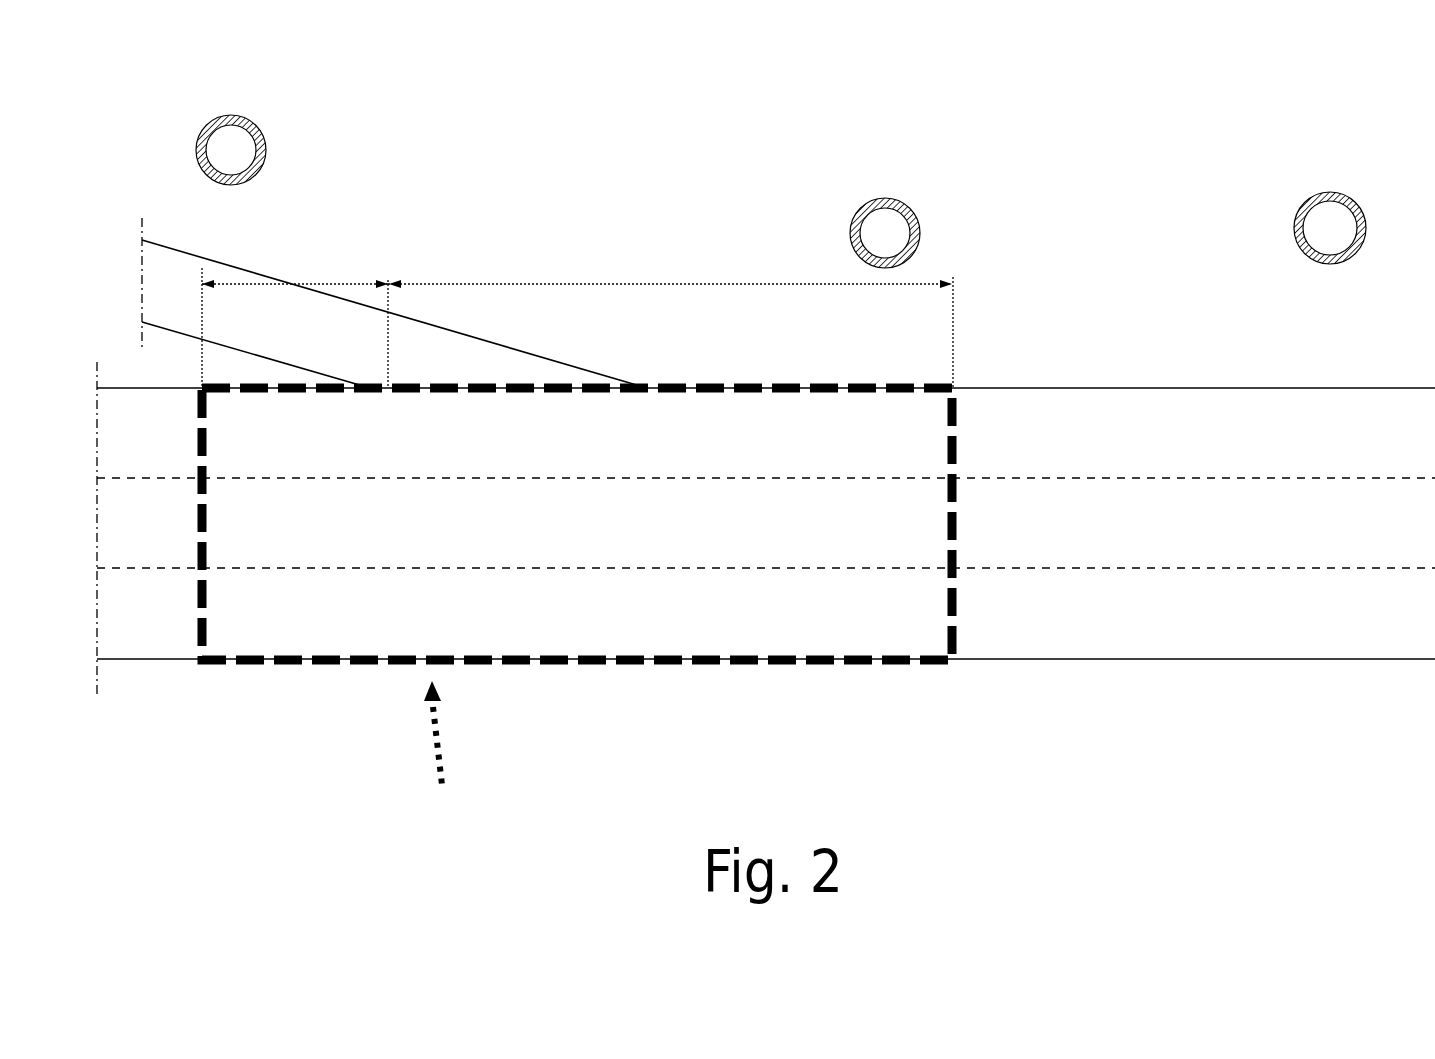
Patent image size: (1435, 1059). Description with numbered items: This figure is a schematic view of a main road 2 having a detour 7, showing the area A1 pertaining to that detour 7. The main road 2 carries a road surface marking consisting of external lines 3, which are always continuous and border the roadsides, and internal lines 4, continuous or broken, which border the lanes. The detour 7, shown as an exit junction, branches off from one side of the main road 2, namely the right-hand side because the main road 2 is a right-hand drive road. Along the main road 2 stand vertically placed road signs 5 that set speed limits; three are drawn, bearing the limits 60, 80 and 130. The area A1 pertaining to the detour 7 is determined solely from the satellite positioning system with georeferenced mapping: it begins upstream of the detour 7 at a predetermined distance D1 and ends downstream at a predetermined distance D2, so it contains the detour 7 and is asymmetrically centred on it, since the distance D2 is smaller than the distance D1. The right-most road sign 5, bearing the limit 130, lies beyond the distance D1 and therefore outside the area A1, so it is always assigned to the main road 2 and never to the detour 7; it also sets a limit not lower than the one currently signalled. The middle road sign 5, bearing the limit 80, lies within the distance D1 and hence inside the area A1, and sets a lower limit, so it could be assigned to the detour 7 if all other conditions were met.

The main road 2 is at (281, 750).
The external lines 3 is at (170, 243).
The internal lines 4 is at (127, 473).
The road signs 5 is at (781, 144).
The detour 7 is at (464, 242).
The speed limit sign 60 is at (231, 150).
The speed limit sign 80 is at (885, 233).
The speed limit sign 130 is at (1330, 228).
The area pertaining to the detour A1 is at (440, 748).
The predetermined distance D1 is at (670, 320).
The predetermined distance D2 is at (295, 320).